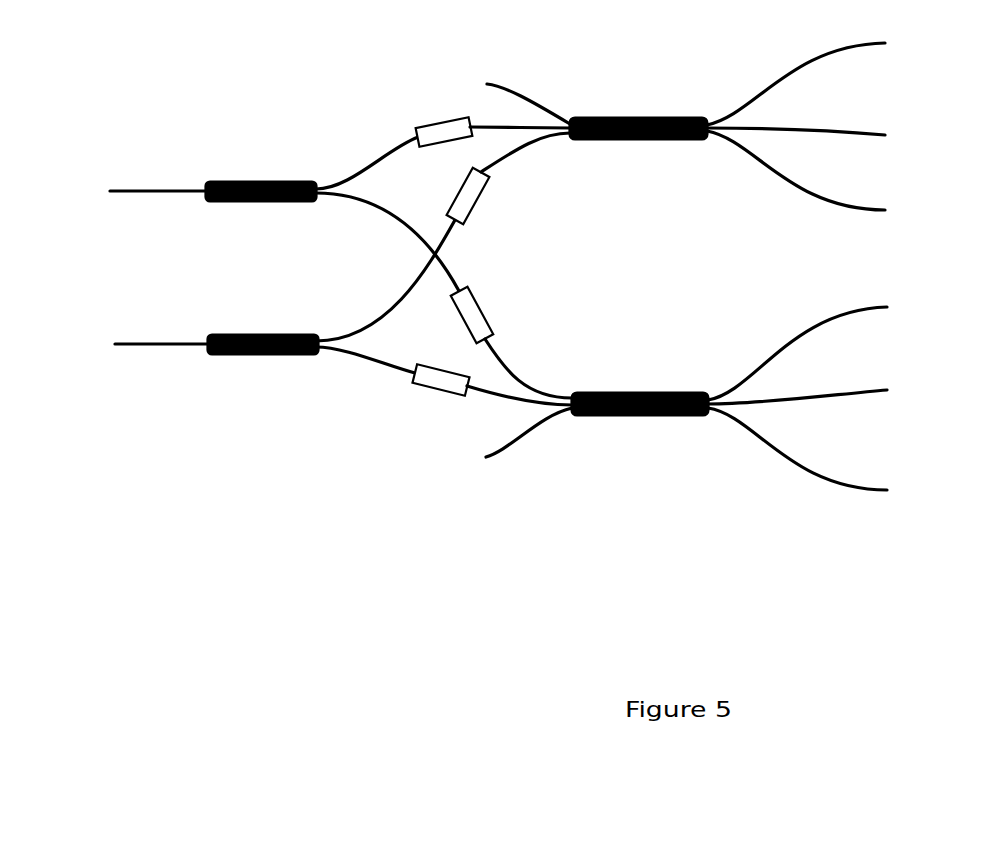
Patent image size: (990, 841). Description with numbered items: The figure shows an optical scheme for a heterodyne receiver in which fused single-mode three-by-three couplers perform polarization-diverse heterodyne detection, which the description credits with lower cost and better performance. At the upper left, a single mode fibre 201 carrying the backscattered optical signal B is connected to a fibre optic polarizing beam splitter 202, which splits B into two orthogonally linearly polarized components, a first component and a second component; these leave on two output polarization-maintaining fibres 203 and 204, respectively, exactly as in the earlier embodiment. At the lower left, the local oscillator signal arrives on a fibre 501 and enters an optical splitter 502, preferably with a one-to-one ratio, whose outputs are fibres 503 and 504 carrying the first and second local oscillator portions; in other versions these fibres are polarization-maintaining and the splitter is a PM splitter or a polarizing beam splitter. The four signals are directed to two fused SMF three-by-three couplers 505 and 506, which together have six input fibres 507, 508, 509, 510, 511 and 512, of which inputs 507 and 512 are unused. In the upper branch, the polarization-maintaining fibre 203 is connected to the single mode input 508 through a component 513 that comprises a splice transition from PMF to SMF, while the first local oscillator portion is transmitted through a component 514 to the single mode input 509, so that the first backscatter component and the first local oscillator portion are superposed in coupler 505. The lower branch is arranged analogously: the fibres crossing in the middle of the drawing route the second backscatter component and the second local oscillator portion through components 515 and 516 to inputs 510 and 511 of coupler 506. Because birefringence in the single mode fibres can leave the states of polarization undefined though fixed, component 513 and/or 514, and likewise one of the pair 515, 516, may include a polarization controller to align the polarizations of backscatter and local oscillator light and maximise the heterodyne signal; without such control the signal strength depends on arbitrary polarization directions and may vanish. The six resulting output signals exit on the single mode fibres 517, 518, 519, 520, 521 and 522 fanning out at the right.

The single mode fibre 201 is at (152, 185).
The fibre optic polarizing beam splitter 202 is at (267, 180).
The output polarization-maintaining fibre 203 is at (360, 170).
The output polarization-maintaining fibre 204 is at (388, 211).
The SMF 501 is at (155, 352).
The optical SM splitter 502 is at (265, 355).
The SMF 503 is at (373, 325).
The SMF 504 is at (365, 360).
The fused SMF 3×3 coupler 505 is at (640, 115).
The fused SMF 3×3 coupler 506 is at (650, 422).
The SMF input 507 is at (493, 80).
The SMF input 508 is at (525, 118).
The SMF input 509 is at (520, 152).
The SMF input 510 is at (518, 378).
The SMF input 511 is at (518, 410).
The SMF input 512 is at (498, 462).
The component 513 is at (437, 120).
The component 514 is at (482, 204).
The component 515 is at (487, 310).
The component 516 is at (432, 393).
The SMF 517 is at (870, 52).
The SMF 518 is at (873, 140).
The SMF 519 is at (873, 215).
The SMF 520 is at (878, 313).
The SMF 521 is at (878, 397).
The SMF 522 is at (878, 498).